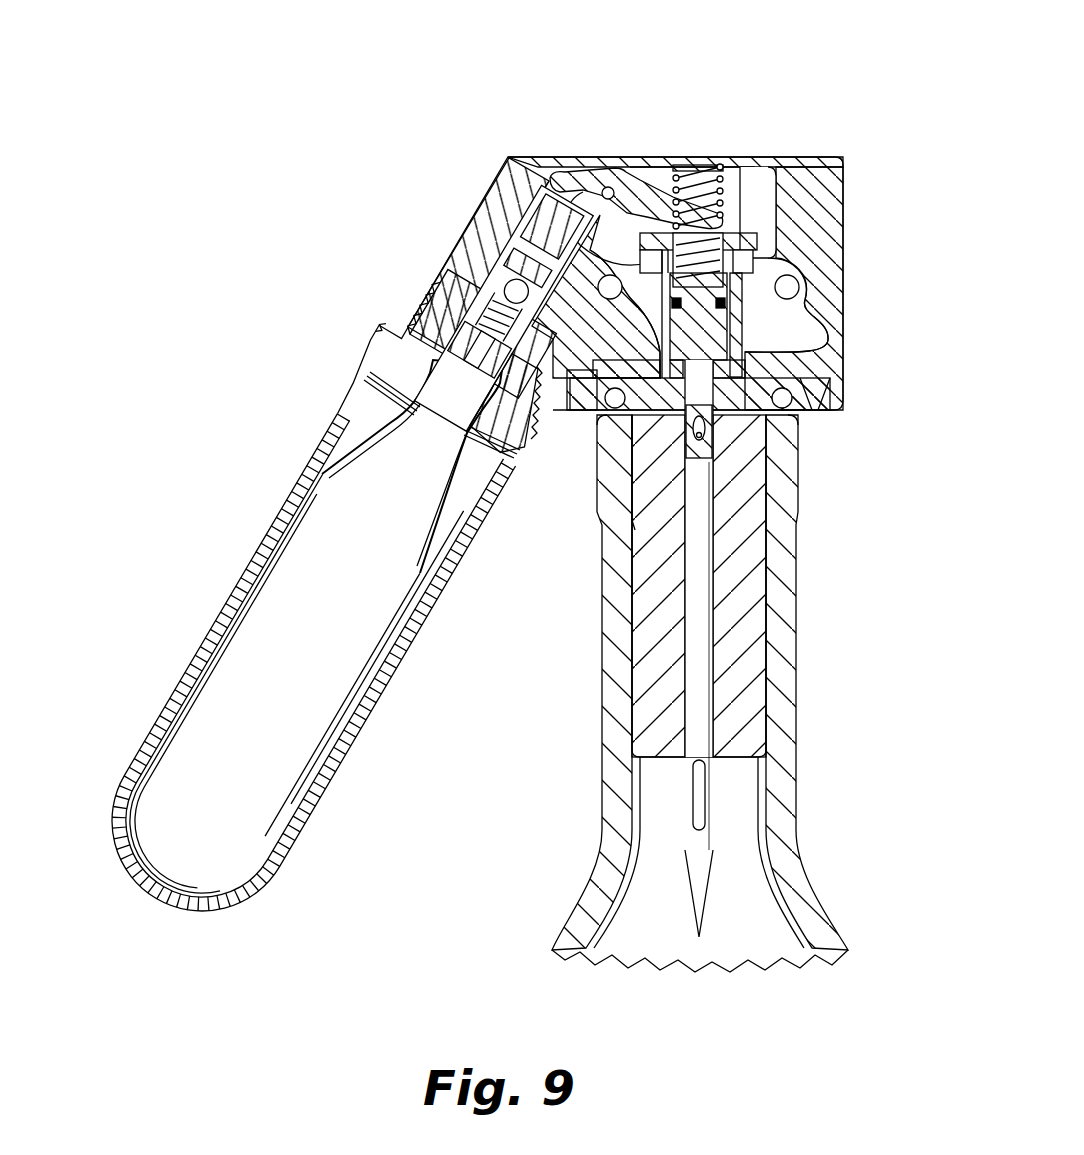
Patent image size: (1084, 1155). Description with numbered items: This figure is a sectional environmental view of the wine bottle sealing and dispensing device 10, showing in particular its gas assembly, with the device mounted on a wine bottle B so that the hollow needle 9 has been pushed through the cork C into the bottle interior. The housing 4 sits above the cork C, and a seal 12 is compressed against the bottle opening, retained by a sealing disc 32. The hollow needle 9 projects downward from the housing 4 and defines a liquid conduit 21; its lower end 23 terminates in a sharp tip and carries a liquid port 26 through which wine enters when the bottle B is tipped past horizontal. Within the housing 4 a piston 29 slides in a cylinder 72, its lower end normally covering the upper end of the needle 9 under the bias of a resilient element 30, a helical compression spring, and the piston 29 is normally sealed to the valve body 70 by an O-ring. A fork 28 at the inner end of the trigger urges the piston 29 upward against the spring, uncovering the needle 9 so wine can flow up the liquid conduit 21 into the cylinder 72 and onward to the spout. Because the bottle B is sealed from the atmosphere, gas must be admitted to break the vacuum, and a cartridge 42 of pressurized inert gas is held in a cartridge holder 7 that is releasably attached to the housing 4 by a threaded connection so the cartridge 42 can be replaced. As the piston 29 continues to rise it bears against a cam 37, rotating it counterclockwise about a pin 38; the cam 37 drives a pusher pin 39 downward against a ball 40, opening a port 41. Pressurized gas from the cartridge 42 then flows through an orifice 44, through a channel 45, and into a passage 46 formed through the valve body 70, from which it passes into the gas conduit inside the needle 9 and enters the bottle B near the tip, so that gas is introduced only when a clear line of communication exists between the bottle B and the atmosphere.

The housing 4 is at (838, 218).
The cartridge holder 7 is at (286, 507).
The hollow needle 9 is at (655, 688).
The wine bottle sealing and dispensing device 10 is at (503, 110).
The seal 12 is at (803, 412).
The liquid conduit 21 is at (720, 627).
The lower end 23 is at (707, 865).
The liquid port 26 is at (697, 798).
The fork 28 is at (852, 157).
The piston 29 is at (797, 157).
The resilient element 30 is at (752, 157).
The sealing disc 32 is at (803, 445).
The cam 37 is at (632, 157).
The pin 38 is at (580, 157).
The pusher pin 39 is at (505, 157).
The ball 40 is at (513, 297).
The port 41 is at (495, 262).
The cartridge 42 is at (250, 712).
The orifice 44 is at (535, 335).
The channel 45 is at (578, 330).
The passage 46 is at (630, 457).
The valve body 70 is at (795, 288).
The cylinder 72 is at (785, 265).
The wine bottle B is at (788, 487).
The cork C is at (745, 555).